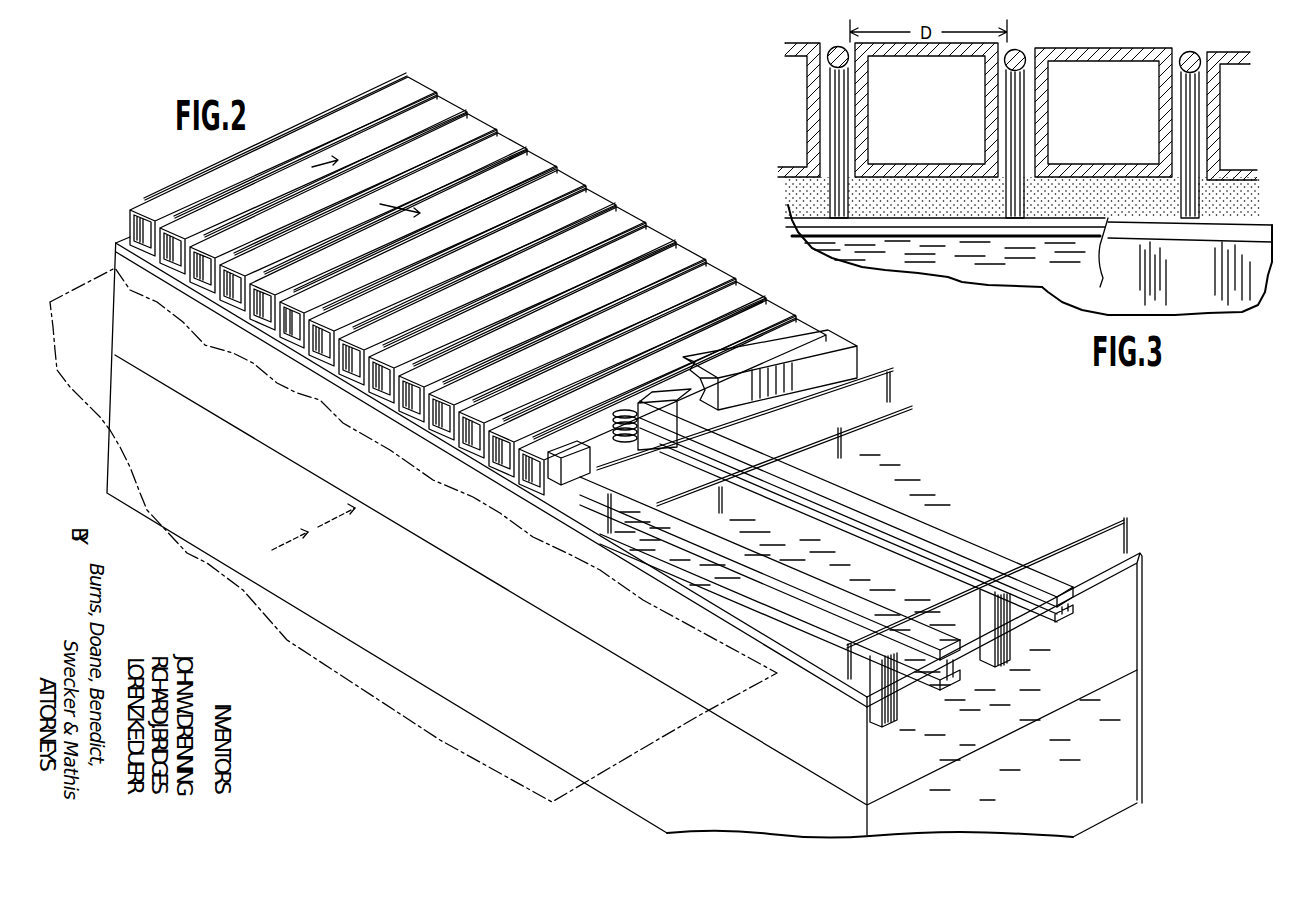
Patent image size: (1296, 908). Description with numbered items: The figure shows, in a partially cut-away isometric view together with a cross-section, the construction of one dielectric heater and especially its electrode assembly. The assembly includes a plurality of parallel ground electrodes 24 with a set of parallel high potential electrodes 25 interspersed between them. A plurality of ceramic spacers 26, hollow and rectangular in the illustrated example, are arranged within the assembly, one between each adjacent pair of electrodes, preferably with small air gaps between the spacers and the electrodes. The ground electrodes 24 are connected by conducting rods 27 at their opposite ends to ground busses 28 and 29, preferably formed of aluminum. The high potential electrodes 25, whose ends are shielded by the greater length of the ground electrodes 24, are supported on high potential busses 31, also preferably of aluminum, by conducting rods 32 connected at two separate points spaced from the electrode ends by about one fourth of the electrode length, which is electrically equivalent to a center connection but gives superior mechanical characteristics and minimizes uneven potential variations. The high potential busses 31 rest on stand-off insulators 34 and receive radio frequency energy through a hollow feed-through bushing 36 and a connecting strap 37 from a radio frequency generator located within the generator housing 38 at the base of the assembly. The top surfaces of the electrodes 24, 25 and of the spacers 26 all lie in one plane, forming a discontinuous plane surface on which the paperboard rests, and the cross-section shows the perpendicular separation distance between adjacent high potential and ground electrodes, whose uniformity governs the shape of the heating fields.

In FIG. 2, the ground electrodes 24 is at (587, 190).
In FIG. 3, the ground electrodes 24 is at (834, 48).
In FIG. 2, the high potential electrodes 25 is at (617, 207).
In FIG. 3, the high potential electrodes 25 is at (1018, 50).
In FIG. 2, the ceramic spacers 26 is at (375, 390).
In FIG. 3, the ceramic spacers 26 is at (790, 72).
In FIG. 2, the conducting rods 27 is at (608, 533).
In FIG. 3, the conducting rods 27 is at (835, 120).
In FIG. 2, the ground buss 28 is at (850, 765).
In FIG. 2, the ground buss 29 is at (1137, 588).
In FIG. 3, the ground buss 29 is at (1197, 282).
In FIG. 2, the high potential busses 31 is at (1068, 612).
In FIG. 3, the high potential busses 31 is at (1057, 270).
In FIG. 2, the conducting rods 32 is at (700, 470).
In FIG. 3, the conducting rods 32 is at (1012, 128).
In FIG. 2, the stand-off insulators 34 is at (1000, 630).
In FIG. 2, the hollow feed-through bushing 36 is at (637, 418).
In FIG. 2, the connecting strap 37 is at (683, 408).
In FIG. 2, the generator housing 38 is at (1052, 803).